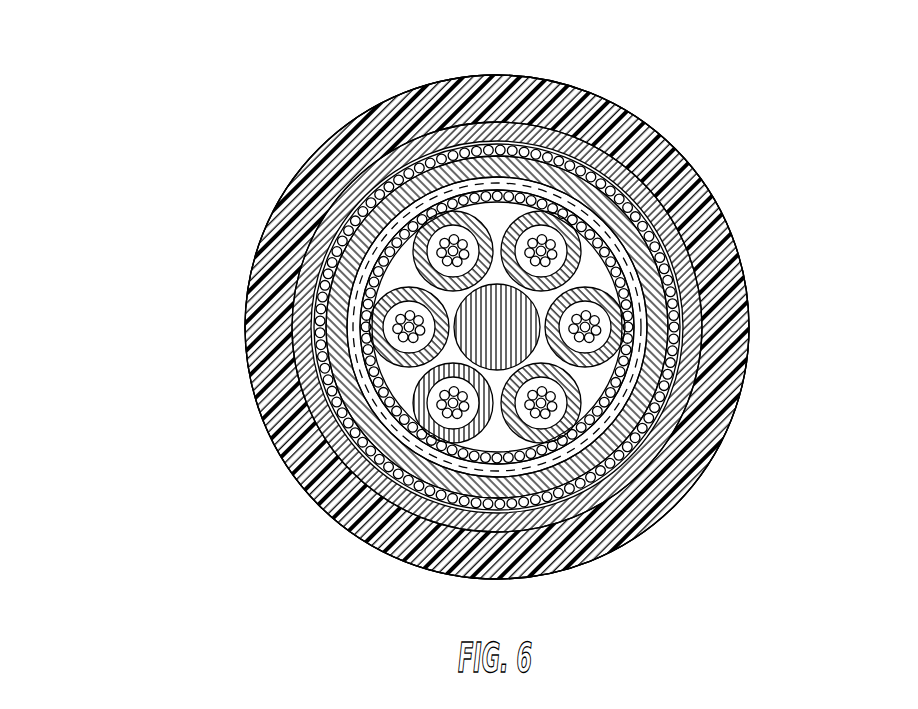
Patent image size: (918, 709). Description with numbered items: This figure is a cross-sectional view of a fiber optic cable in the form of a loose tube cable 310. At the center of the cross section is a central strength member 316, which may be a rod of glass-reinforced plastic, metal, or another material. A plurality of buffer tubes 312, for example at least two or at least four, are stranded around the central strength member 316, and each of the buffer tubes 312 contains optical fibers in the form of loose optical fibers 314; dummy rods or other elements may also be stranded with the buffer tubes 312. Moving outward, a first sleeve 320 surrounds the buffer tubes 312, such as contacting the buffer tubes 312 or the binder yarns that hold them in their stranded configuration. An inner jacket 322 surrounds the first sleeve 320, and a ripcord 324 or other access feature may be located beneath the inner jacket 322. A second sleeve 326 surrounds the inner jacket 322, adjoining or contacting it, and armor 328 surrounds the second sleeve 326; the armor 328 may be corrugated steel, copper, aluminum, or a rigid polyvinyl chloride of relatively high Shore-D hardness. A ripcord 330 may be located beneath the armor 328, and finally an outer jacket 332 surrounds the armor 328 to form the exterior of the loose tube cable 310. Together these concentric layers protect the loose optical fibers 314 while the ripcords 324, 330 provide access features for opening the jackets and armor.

The loose tube cable 310 is at (158, 226).
The buffer tubes 312 is at (617, 312).
The loose optical fibers 314 is at (593, 336).
The central strength member 316 is at (505, 322).
The first sleeve 320 is at (587, 434).
The inner jacket 322 is at (623, 406).
The ripcord 324 is at (286, 443).
The second sleeve 326 is at (586, 455).
The armor 328 is at (648, 190).
The ripcord 330 is at (676, 327).
The outer jacket 332 is at (605, 135).